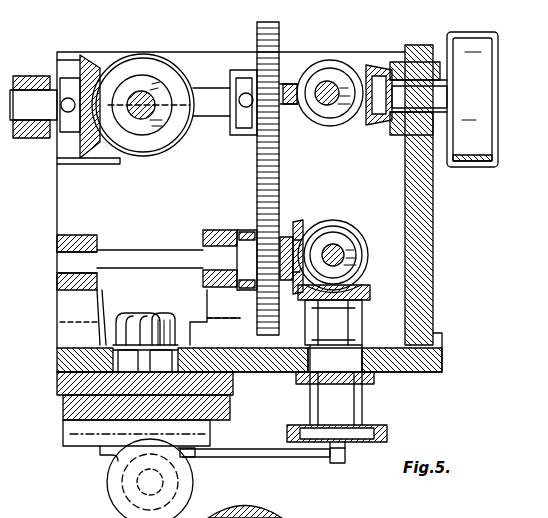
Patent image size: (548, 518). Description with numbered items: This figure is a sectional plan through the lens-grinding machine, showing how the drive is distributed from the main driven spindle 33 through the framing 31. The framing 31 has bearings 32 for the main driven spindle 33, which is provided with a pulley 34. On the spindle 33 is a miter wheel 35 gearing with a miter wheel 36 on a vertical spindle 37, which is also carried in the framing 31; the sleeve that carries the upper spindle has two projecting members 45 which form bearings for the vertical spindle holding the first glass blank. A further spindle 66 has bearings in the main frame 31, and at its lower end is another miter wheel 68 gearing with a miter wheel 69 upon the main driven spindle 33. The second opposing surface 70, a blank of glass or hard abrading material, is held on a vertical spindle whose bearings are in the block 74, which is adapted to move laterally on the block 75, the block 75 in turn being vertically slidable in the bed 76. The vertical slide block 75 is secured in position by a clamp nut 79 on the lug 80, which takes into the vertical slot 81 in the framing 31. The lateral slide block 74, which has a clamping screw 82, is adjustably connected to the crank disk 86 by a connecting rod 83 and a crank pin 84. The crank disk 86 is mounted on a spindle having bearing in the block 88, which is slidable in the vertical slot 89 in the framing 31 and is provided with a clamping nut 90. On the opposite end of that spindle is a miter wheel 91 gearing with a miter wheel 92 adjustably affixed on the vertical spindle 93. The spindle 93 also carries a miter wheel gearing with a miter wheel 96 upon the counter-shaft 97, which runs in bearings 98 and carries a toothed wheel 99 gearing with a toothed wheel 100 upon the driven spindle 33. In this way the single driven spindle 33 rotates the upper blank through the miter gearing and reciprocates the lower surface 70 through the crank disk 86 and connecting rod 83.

The framing 31 is at (407, 190).
The bearings 32 is at (40, 140).
The main driven spindle 33 is at (207, 98).
The pulley 34 is at (472, 99).
The miter wheel 35 is at (80, 60).
The miter wheel 36 is at (138, 66).
The vertical spindle 37 is at (138, 115).
The projecting members 45 is at (266, 511).
The spindle 66 is at (320, 105).
The miter wheel 68 is at (328, 125).
The miter wheel 69 is at (365, 128).
The second opposing surface 70 is at (151, 478).
The block 74 is at (85, 440).
The block 75 is at (230, 410).
The bed 76 is at (233, 385).
The clamp nut 79 is at (140, 313).
The lug 80 is at (168, 313).
The vertical slot 81 is at (103, 342).
The clamping screw 82 is at (104, 458).
The connecting rod 83 is at (262, 457).
The crank pin 84 is at (345, 462).
The crank disk 86 is at (388, 433).
The block 88 is at (335, 385).
The vertical slot 89 is at (376, 382).
The clamping nut 90 is at (362, 318).
The miter wheel 91 is at (370, 290).
The miter wheel 92 is at (368, 262).
The vertical spindle 93 is at (352, 242).
The miter wheel 96 is at (303, 225).
The counter-shaft 97 is at (157, 258).
The bearings 98 is at (85, 235).
The toothed wheel 99 is at (268, 215).
The toothed wheel 100 is at (253, 135).